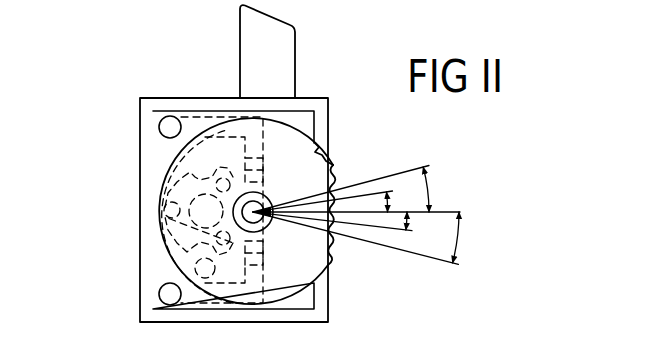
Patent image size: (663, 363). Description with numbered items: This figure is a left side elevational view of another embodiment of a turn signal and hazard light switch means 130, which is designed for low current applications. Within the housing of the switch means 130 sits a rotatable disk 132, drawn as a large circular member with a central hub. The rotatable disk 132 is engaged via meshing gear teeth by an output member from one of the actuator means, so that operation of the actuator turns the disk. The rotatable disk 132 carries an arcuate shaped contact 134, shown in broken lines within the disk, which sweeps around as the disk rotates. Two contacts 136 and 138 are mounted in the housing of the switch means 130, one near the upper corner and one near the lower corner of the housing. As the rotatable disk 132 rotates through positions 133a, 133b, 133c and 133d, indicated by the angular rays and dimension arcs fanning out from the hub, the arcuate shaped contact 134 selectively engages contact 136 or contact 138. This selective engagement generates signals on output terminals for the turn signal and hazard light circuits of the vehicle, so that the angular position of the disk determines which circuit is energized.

The turn signal and hazard light switch means 130 is at (163, 80).
The rotatable disk 132 is at (312, 180).
The position 133a is at (388, 203).
The position 133b is at (429, 183).
The position 133c is at (407, 232).
The position 133d is at (455, 242).
The arcuate shaped contact 134 is at (172, 178).
The contact 136 is at (160, 130).
The contact 138 is at (160, 296).